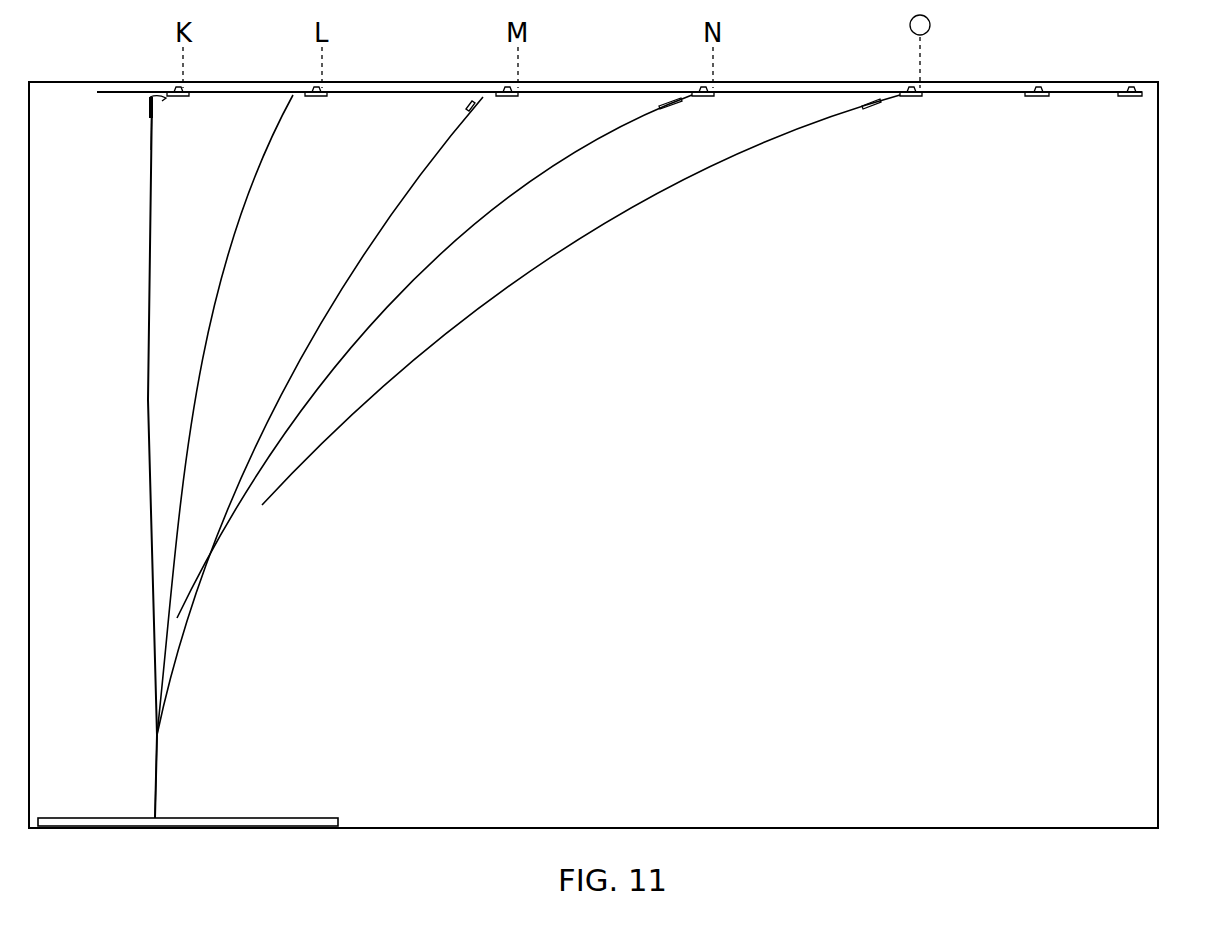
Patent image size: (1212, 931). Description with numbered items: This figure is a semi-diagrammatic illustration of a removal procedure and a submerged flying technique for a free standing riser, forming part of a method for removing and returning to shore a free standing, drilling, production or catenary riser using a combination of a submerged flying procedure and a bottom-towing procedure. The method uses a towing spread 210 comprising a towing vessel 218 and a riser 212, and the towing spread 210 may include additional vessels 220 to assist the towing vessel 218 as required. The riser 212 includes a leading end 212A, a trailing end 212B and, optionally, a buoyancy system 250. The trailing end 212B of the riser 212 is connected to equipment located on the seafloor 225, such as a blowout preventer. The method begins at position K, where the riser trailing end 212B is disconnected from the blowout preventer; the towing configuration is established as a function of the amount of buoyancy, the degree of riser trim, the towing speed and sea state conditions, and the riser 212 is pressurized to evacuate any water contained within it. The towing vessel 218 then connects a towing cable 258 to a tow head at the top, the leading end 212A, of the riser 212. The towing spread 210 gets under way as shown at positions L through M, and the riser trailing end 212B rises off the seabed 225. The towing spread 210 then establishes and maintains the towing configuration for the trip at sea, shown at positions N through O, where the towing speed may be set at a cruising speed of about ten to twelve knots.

The towing spread 210 is at (810, 64).
The riser 212 is at (148, 357).
The leading end 212A is at (150, 145).
The trailing end 212B is at (155, 781).
The towing vessel 218 is at (187, 88).
The additional vessels 220 is at (1036, 88).
The seafloor 225 is at (278, 818).
The buoyancy system 250 is at (148, 108).
The towing cable 258 is at (158, 100).